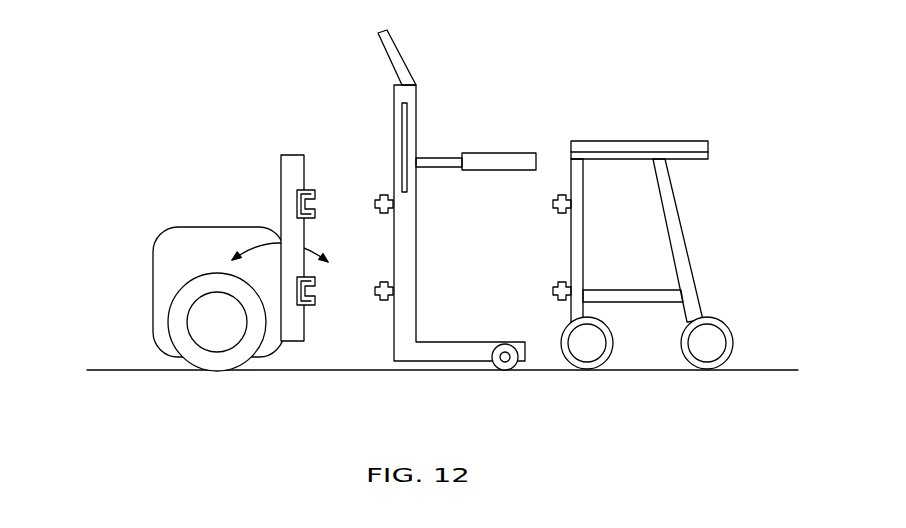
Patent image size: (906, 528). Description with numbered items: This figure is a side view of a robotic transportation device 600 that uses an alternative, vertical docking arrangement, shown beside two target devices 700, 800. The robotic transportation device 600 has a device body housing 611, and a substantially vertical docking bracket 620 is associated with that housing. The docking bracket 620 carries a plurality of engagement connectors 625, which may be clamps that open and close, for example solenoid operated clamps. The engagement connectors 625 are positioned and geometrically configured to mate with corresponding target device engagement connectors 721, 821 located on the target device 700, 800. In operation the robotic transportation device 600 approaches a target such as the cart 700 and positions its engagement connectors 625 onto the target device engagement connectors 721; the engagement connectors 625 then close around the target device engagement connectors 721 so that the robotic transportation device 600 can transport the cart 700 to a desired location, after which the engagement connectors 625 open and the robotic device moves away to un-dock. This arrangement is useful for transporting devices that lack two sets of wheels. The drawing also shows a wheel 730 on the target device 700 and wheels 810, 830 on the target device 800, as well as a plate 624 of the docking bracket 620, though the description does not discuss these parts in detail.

The robotic transportation device 600 is at (142, 230).
The device body housing 611 is at (153, 318).
The docking bracket 620 is at (313, 327).
The mounting plate 624 is at (281, 195).
The engagement connectors 625 is at (315, 214).
The target device 700 is at (435, 95).
The target device engagement connectors 721 is at (375, 205).
The truck wheel 730 is at (505, 371).
The target device 800 is at (708, 122).
The cart front wheel 810 is at (613, 336).
The target device engagement connectors 821 is at (553, 205).
The cart rear wheel 830 is at (733, 336).